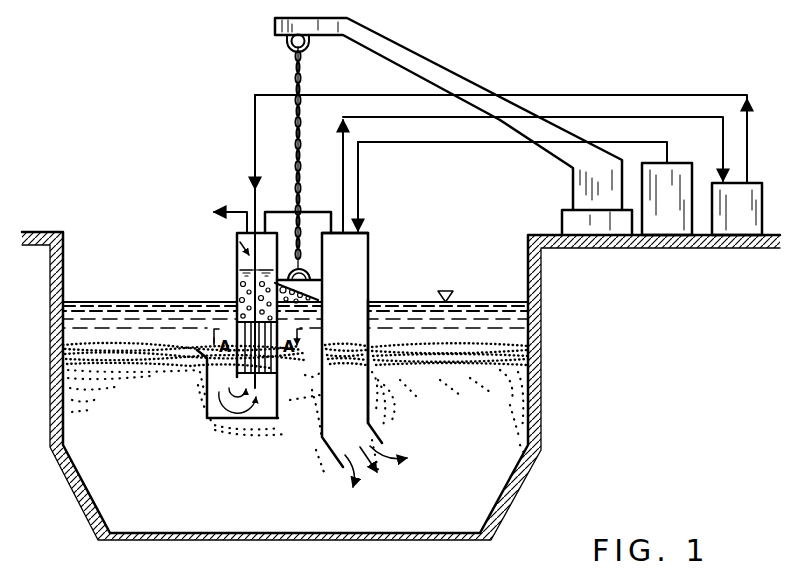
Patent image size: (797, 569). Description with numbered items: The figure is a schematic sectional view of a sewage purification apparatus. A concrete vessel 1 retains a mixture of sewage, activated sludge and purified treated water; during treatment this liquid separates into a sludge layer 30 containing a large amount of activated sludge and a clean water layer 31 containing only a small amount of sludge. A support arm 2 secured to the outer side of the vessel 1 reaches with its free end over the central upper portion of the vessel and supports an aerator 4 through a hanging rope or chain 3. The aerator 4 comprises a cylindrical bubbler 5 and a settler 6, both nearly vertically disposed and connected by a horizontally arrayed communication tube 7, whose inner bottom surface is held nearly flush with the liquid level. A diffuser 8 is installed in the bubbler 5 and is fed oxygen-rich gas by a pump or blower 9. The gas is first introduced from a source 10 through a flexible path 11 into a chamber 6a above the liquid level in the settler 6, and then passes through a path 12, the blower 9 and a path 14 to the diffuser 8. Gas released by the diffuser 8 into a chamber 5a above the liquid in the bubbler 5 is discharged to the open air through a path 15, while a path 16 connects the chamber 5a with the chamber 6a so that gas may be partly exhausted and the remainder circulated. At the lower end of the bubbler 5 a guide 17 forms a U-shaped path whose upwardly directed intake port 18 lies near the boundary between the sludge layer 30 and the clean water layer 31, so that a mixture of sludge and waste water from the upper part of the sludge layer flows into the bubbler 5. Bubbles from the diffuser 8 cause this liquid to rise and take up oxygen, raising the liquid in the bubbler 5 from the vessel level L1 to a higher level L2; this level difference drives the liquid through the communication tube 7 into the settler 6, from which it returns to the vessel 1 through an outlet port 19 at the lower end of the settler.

The vessel 1 is at (96, 248).
The support arm 2 is at (383, 40).
The hanging rope or chain 3 is at (296, 74).
The aerator 4 is at (374, 263).
The cylindrical bubbler 5 is at (237, 287).
The chamber above the liquid level in the bubbler 5a is at (230, 241).
The settler 6 is at (368, 337).
The chamber above the liquid level in the settler 6a is at (349, 263).
The communication tube 7 is at (311, 266).
The diffuser 8 is at (244, 367).
The pump or blower 9 is at (755, 183).
The source 10 is at (684, 164).
The path 11 is at (437, 145).
The path 12 is at (400, 120).
The path 14 is at (688, 95).
The path 15 is at (245, 208).
The path 16 is at (324, 211).
The guide 17 is at (222, 416).
The intake port 18 is at (199, 343).
The outlet port 19 is at (343, 463).
The sludge layer 30 is at (461, 449).
The clean water layer 31 is at (445, 341).
The liquid level in the vessel L1 is at (478, 302).
The liquid level in the bubbler L2 is at (238, 266).